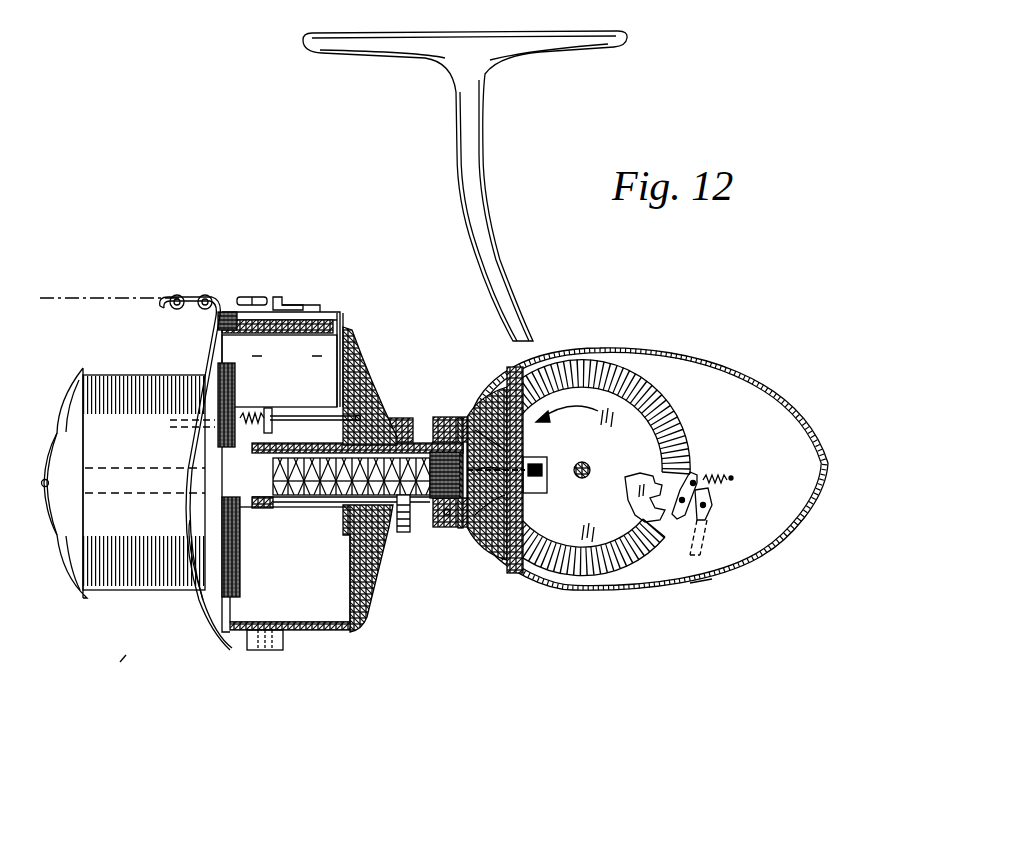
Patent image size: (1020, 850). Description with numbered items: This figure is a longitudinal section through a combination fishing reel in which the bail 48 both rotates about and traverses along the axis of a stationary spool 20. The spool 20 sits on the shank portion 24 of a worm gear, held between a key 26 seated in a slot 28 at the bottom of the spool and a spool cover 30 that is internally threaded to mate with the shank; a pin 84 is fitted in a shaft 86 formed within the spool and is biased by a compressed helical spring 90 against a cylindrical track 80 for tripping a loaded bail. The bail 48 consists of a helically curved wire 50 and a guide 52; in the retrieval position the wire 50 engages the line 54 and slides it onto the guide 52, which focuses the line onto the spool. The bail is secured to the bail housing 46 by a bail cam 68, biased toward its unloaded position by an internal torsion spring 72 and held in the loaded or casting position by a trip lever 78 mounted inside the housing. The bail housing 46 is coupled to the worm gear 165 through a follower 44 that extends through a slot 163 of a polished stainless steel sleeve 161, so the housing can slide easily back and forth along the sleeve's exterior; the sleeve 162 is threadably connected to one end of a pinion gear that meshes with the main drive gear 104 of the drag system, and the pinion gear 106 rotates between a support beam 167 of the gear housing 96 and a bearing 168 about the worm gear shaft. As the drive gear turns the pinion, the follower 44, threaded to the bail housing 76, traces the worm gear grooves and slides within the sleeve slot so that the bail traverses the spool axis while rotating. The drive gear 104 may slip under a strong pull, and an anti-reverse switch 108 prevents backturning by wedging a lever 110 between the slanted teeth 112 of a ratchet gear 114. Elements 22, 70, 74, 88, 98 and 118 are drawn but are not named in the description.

The spool 20 is at (128, 580).
The fishing line 22 is at (128, 496).
The shank portion 24 is at (122, 467).
The key 26 is at (240, 503).
The slot 28 is at (238, 503).
The spool cover 30 is at (72, 378).
The follower 44 is at (420, 532).
The bail housing 46 is at (380, 572).
The bail 48 is at (236, 652).
The helically curved wire 50 is at (205, 630).
The guide 52 is at (156, 314).
The line 54 is at (126, 297).
The bail cam 68 is at (302, 305).
The screw 70 is at (250, 297).
The torsion spring 72 is at (272, 355).
The line roller 74 is at (236, 310).
The bail housing 76 is at (279, 371).
The trip lever 78 is at (342, 312).
The cylindrical track 80 is at (348, 553).
The pin 84 is at (290, 415).
The shaft 86 is at (172, 428).
The rotor body 88 is at (365, 392).
The helical spring 90 is at (250, 410).
The gear housing 96 is at (740, 562).
The housing bottom 98 is at (702, 590).
The main drive gear 104 is at (663, 387).
The pinion gear 106 is at (532, 490).
The anti-reverse switch 108 is at (703, 530).
The lever 110 is at (703, 478).
The slanted teeth 112 is at (634, 500).
The ratchet gear 114 is at (656, 470).
The reel assembly 118 is at (120, 666).
The sleeve 161 is at (447, 418).
The sleeve 162 is at (325, 506).
The slot 163 is at (400, 418).
The worm gear 165 is at (372, 442).
The support beam 167 is at (527, 460).
The bearing 168 is at (455, 527).